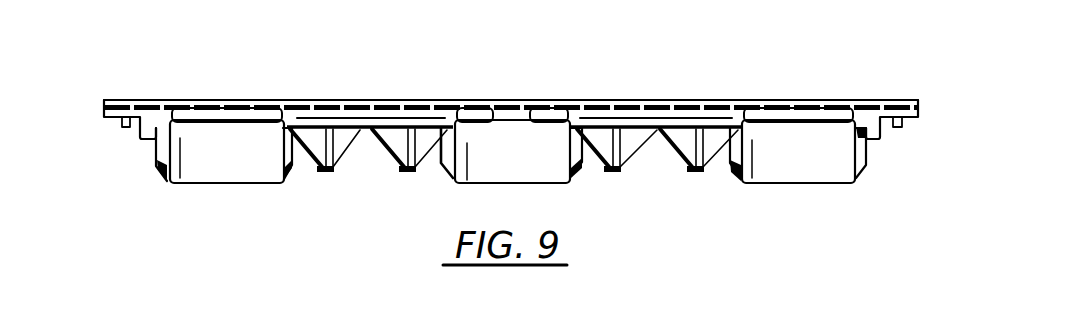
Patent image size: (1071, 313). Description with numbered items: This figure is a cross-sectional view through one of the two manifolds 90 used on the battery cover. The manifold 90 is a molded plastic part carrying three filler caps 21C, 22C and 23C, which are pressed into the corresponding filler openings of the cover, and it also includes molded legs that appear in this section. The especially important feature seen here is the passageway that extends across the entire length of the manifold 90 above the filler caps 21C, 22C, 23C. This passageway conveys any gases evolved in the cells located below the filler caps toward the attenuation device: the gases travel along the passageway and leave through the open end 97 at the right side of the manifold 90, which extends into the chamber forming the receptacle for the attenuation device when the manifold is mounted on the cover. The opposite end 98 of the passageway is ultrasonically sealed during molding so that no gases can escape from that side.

The manifold 90 is at (511, 107).
The open end 97 is at (907, 125).
The opposite end 98 is at (117, 120).
The filler cap 21C is at (165, 180).
The filler cap 22C is at (454, 180).
The filler cap 23C is at (740, 180).